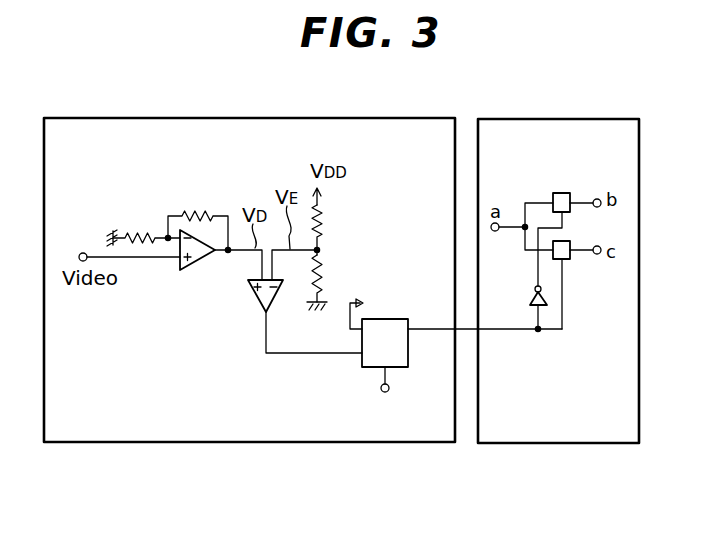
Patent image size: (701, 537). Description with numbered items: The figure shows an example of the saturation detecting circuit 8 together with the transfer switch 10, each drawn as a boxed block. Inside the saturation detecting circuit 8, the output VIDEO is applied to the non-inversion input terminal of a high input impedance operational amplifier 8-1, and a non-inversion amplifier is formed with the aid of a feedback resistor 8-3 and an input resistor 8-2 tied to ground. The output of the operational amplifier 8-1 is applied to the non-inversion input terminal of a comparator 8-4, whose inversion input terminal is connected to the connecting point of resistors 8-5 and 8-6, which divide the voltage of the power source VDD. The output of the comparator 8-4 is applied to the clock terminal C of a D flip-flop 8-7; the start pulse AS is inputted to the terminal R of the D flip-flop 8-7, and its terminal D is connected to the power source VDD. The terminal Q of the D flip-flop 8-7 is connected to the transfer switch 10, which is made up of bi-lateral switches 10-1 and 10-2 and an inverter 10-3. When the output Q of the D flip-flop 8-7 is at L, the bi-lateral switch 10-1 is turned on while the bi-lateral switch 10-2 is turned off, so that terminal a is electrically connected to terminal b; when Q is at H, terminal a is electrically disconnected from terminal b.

The saturation detecting circuit 8 is at (146, 117).
The high input impedance operational amplifier 8-1 is at (204, 268).
The resistor 8-2 is at (134, 235).
The resistor 8-3 is at (200, 214).
The comparator 8-4 is at (258, 298).
The resistor 8-5 is at (319, 223).
The resistor 8-6 is at (320, 281).
The D flip-flop 8-7 is at (362, 360).
The transfer switch 10 is at (569, 118).
The bi-lateral switch 10-1 is at (560, 192).
The bi-lateral switch 10-2 is at (562, 242).
The inverter 10-3 is at (532, 298).